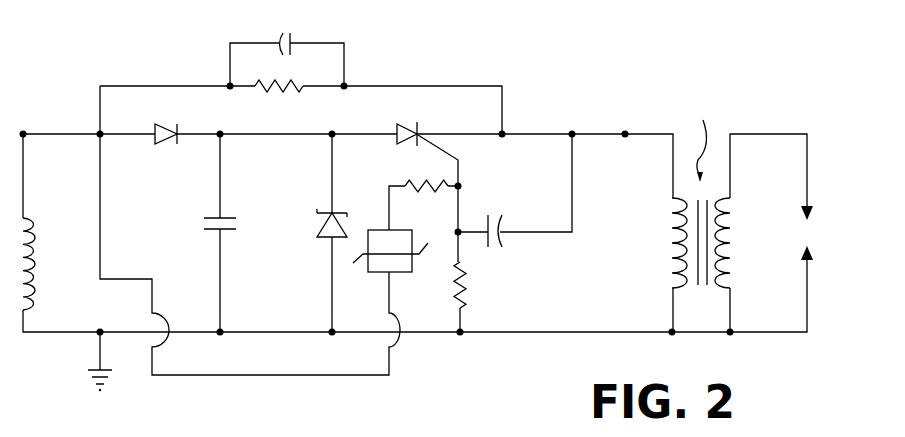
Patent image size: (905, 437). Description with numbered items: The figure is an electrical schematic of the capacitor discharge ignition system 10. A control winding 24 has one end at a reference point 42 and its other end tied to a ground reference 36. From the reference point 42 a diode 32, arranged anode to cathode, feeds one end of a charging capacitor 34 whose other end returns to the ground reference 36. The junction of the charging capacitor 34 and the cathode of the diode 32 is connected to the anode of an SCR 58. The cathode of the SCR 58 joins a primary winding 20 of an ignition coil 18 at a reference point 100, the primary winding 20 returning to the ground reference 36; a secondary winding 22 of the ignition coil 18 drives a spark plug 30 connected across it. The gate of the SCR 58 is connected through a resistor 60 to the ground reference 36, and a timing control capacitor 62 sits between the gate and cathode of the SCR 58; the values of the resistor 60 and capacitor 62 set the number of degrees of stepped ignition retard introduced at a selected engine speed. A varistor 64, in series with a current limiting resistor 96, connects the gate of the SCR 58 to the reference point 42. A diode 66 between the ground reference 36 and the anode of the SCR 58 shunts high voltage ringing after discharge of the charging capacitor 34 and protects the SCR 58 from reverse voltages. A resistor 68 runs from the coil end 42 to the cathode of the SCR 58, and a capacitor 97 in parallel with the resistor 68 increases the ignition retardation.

The capacitor discharge ignition system 10 is at (155, 54).
The reference point 42 is at (26, 132).
The control winding 24 is at (36, 252).
The ground reference 36 is at (95, 336).
The diode 32 is at (160, 144).
The charging capacitor 34 is at (224, 218).
The diode 66 is at (318, 225).
The resistor 68 is at (277, 96).
The capacitor 97 is at (294, 48).
The SCR 58 is at (410, 126).
The resistor 96 is at (422, 184).
The varistor 64 is at (380, 276).
The timing control capacitor 62 is at (503, 222).
The resistor 60 is at (466, 291).
The reference point 100 is at (625, 130).
The ignition coil 18 is at (704, 189).
The primary winding 20 is at (668, 243).
The secondary winding 22 is at (736, 258).
The spark plug 30 is at (812, 234).